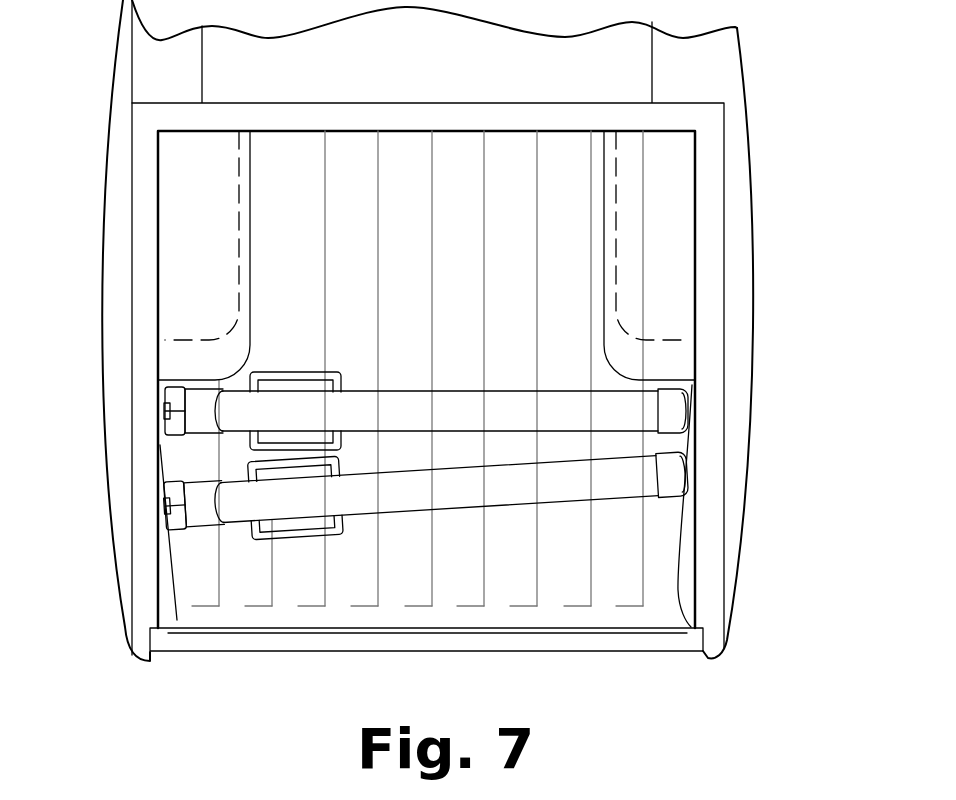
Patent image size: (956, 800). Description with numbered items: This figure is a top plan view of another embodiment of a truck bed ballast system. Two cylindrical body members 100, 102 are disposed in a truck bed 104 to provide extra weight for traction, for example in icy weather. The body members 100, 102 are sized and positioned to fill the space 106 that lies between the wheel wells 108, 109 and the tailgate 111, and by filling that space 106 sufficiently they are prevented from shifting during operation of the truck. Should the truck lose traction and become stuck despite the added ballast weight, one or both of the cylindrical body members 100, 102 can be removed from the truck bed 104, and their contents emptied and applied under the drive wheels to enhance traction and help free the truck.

The cylindrical body member 100 is at (200, 527).
The cylindrical body member 102 is at (620, 408).
The truck bed 104 is at (800, 165).
The space 106 is at (140, 388).
The wheel well 108 is at (673, 295).
The wheel well 109 is at (175, 179).
The tailgate 111 is at (280, 650).